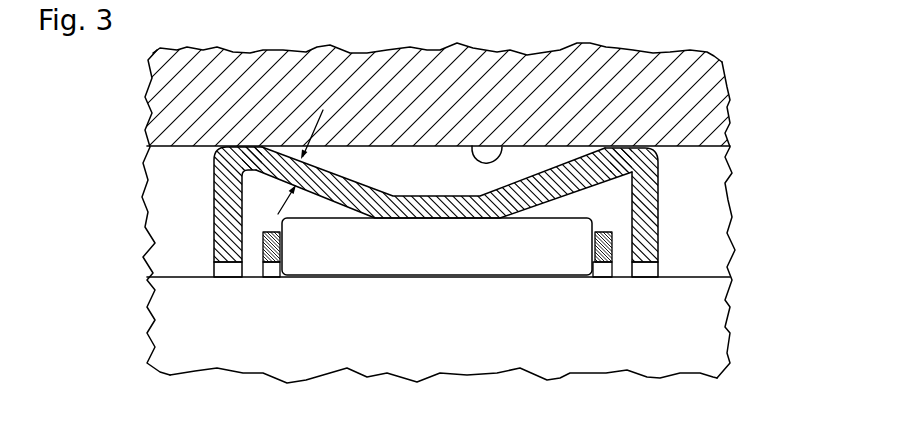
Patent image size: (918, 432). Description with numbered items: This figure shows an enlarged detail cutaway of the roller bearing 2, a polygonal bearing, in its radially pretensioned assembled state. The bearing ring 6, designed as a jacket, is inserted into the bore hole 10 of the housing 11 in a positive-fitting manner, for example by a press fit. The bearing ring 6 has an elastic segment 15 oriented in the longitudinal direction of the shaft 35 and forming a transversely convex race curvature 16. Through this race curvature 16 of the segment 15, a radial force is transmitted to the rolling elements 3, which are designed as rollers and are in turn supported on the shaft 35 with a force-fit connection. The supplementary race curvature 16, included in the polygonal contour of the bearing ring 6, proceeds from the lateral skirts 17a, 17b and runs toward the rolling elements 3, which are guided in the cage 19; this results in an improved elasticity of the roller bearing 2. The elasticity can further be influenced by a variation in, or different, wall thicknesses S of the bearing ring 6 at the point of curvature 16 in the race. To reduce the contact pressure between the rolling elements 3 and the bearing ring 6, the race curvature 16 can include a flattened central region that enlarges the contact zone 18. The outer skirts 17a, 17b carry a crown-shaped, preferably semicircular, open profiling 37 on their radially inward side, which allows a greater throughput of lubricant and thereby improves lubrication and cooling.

The roller bearing 2 is at (178, 215).
The rolling elements 3 is at (467, 250).
The bearing ring 6 is at (628, 146).
The bore hole 10 is at (714, 157).
The housing 11 is at (561, 88).
The elastic segment 15 is at (380, 190).
The race curvature 16 is at (436, 138).
The lateral skirt 17a is at (226, 194).
The lateral skirt 17b is at (650, 249).
The contact zone 18 is at (422, 220).
The cage 19 is at (603, 264).
The shaft 35 is at (211, 346).
The profiling 37 is at (472, 146).
The wall thickness S is at (283, 199).